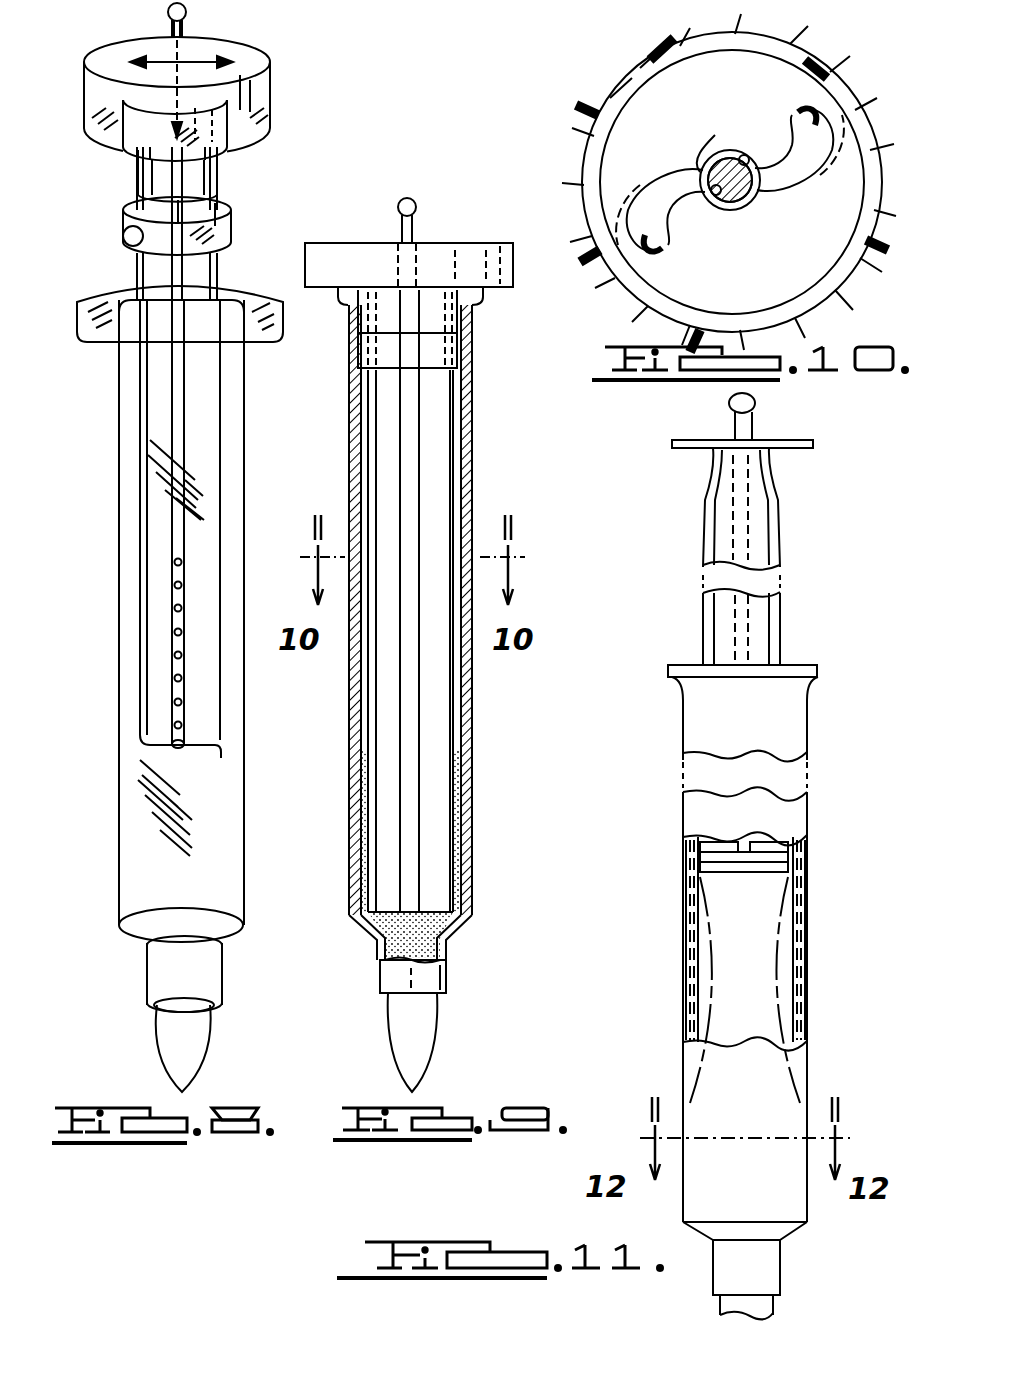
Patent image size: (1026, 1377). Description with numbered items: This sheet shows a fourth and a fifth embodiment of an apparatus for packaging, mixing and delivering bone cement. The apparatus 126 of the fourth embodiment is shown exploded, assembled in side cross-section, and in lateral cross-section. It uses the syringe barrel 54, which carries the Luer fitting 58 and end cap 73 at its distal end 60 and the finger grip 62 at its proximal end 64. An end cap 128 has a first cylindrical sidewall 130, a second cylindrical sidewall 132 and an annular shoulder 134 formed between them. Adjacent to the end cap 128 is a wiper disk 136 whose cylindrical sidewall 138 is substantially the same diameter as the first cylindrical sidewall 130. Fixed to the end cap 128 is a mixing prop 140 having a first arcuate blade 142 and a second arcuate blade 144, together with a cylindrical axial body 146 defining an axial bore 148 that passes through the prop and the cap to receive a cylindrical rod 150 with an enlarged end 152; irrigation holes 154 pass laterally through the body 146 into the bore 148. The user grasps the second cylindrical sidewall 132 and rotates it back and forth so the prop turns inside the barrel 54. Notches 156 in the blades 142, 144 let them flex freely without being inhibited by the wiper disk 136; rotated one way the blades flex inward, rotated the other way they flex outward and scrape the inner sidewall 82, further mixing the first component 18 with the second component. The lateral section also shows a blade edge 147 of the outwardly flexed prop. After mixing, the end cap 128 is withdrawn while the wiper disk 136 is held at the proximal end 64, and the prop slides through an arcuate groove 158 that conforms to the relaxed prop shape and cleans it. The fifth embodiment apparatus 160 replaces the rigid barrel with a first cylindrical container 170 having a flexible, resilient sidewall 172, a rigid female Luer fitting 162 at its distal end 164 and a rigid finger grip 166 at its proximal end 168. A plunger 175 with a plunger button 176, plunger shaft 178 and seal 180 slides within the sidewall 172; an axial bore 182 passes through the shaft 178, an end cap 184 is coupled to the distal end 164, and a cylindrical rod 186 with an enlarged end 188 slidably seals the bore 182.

In FIG. 9, the first component 18 is at (458, 805).
In FIG. 8, the syringe barrel 54 is at (118, 650).
In FIG. 9, the syringe barrel 54 is at (410, 632).
In FIG. 10, the syringe barrel 54 is at (805, 60).
In FIG. 8, the Luer fitting 58 is at (160, 976).
In FIG. 9, the Luer fitting 58 is at (440, 975).
In FIG. 8, the distal end 60 is at (138, 1010).
In FIG. 9, the distal end 60 is at (375, 995).
In FIG. 8, the finger grip 62 is at (258, 340).
In FIG. 8, the proximal end 64 is at (242, 290).
In FIG. 8, the end cap 73 is at (178, 1045).
In FIG. 9, the end cap 73 is at (432, 1055).
In FIG. 10, the inner sidewall 82 is at (840, 280).
In FIG. 8, the apparatus 126 is at (341, 103).
In FIG. 8, the end cap 128 is at (140, 38).
In FIG. 8, the first cylindrical sidewall 130 is at (215, 135).
In FIG. 9, the first cylindrical sidewall 130 is at (435, 320).
In FIG. 8, the second cylindrical sidewall 132 is at (95, 80).
In FIG. 9, the second cylindrical sidewall 132 is at (514, 252).
In FIG. 8, the annular shoulder 134 is at (248, 128).
In FIG. 9, the annular shoulder 134 is at (495, 295).
In FIG. 8, the wiper disk 136 is at (225, 212).
In FIG. 9, the wiper disk 136 is at (435, 348).
In FIG. 8, the cylindrical sidewall 138 is at (128, 220).
In FIG. 8, the mixing prop 140 is at (155, 520).
In FIG. 10, the mixing prop 140 is at (672, 175).
In FIG. 10, the first arcuate blade 142 is at (790, 192).
In FIG. 10, the second arcuate blade 144 is at (665, 240).
In FIG. 10, the cylindrical axial body 146 is at (718, 162).
In FIG. 10, the blade edge 147 is at (812, 190).
In FIG. 9, the axial bore 148 is at (420, 262).
In FIG. 10, the axial bore 148 is at (725, 208).
In FIG. 8, the cylindrical rod 150 is at (200, 42).
In FIG. 9, the cylindrical rod 150 is at (400, 225).
In FIG. 10, the cylindrical rod 150 is at (735, 162).
In FIG. 8, the enlarged end 152 is at (188, 12).
In FIG. 9, the enlarged end 152 is at (407, 198).
In FIG. 8, the irrigation holes 154 is at (176, 585).
In FIG. 8, the notches 156 is at (142, 183).
In FIG. 9, the notches 156 is at (435, 380).
In FIG. 8, the arcuate groove 158 is at (123, 233).
In FIG. 11, the apparatus 160 is at (863, 563).
In FIG. 11, the female Luer fitting 162 is at (765, 1258).
In FIG. 11, the distal end 164 is at (775, 1298).
In FIG. 11, the finger grip 166 is at (818, 673).
In FIG. 11, the proximal end 168 is at (800, 668).
In FIG. 11, the first cylindrical container 170 is at (808, 805).
In FIG. 11, the flexible sidewall 172 is at (808, 946).
In FIG. 11, the plunger 175 is at (703, 541).
In FIG. 11, the plunger button 176 is at (814, 446).
In FIG. 11, the plunger shaft 178 is at (723, 620).
In FIG. 11, the seal 180 is at (792, 869).
In FIG. 11, the axial bore 182 is at (752, 497).
In FIG. 11, the end cap 184 is at (760, 1308).
In FIG. 11, the cylindrical rod 186 is at (748, 428).
In FIG. 11, the enlarged end 188 is at (750, 405).